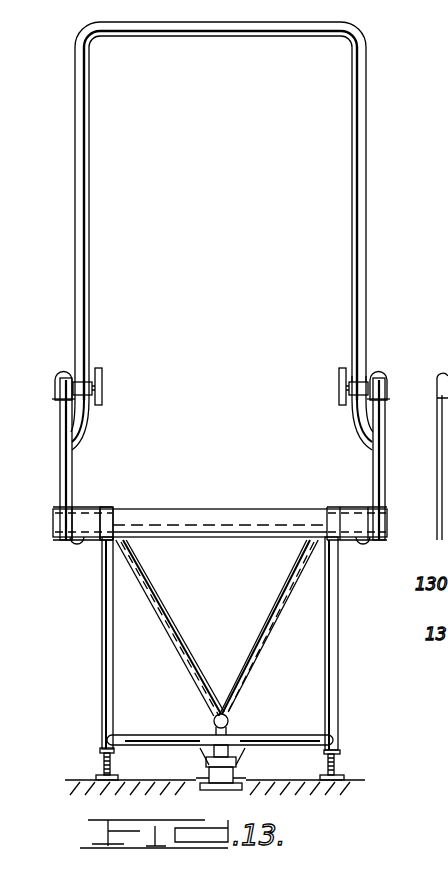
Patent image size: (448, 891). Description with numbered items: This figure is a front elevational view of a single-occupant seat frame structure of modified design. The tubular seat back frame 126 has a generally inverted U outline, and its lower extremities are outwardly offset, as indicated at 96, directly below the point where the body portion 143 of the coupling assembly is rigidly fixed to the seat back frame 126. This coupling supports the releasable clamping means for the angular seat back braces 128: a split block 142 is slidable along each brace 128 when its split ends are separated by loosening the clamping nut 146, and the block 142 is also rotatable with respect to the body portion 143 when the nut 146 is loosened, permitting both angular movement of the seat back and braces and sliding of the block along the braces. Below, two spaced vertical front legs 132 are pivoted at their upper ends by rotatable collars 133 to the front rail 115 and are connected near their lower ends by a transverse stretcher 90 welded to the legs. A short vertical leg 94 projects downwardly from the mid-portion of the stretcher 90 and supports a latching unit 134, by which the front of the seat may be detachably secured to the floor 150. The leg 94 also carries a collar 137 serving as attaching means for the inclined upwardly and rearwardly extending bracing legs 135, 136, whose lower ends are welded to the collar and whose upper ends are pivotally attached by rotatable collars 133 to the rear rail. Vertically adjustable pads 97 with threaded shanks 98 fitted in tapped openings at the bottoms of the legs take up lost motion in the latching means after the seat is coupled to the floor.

The tubular seat back frame 126 is at (360, 128).
The body portion of the coupling assembly 143 is at (363, 359).
The split block 142 is at (385, 374).
The clamping nut 146 is at (339, 382).
The angular seat back brace 128 is at (70, 450).
The outwardly offset lower extremity 96 is at (361, 428).
The rotatable collar 133 is at (117, 497).
The front rail 115 is at (215, 495).
The front leg 132 is at (103, 620).
The bracing leg 135 is at (148, 593).
The bracing leg 136 is at (286, 596).
The short vertical leg 94 is at (205, 738).
The transverse stretcher 90 is at (302, 735).
The floor 150 is at (75, 780).
The collar 137 is at (208, 770).
The latching unit 134 is at (234, 774).
The threaded shank 98 is at (336, 765).
The vertically adjustable pad 97 is at (342, 778).